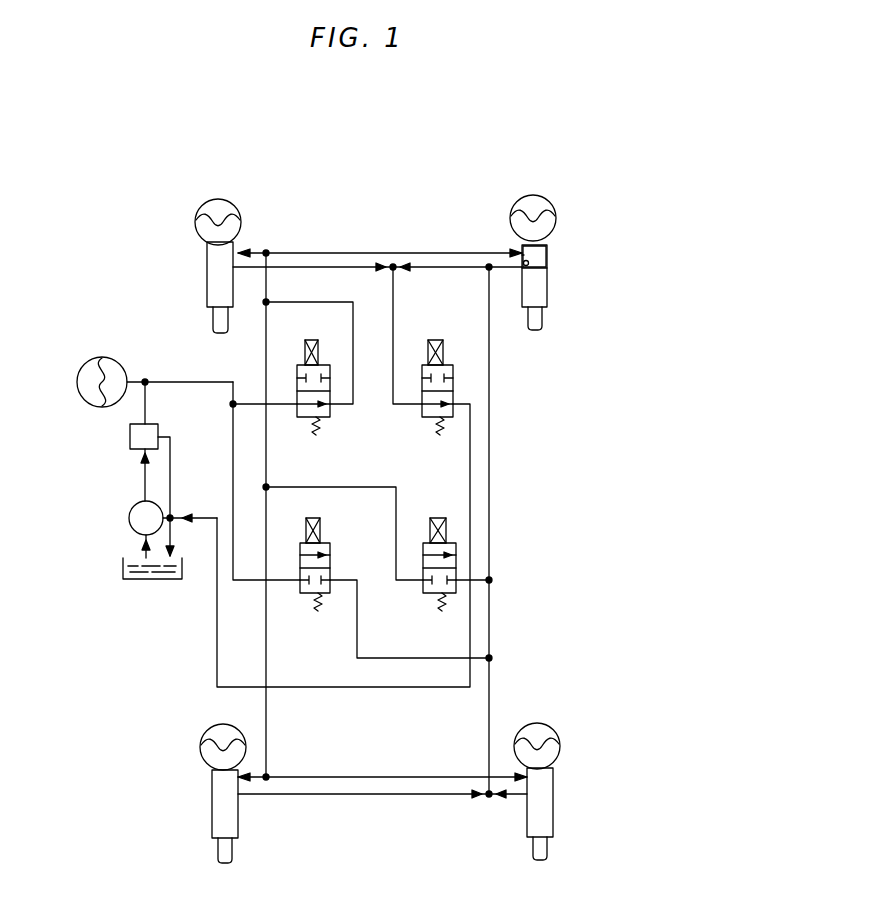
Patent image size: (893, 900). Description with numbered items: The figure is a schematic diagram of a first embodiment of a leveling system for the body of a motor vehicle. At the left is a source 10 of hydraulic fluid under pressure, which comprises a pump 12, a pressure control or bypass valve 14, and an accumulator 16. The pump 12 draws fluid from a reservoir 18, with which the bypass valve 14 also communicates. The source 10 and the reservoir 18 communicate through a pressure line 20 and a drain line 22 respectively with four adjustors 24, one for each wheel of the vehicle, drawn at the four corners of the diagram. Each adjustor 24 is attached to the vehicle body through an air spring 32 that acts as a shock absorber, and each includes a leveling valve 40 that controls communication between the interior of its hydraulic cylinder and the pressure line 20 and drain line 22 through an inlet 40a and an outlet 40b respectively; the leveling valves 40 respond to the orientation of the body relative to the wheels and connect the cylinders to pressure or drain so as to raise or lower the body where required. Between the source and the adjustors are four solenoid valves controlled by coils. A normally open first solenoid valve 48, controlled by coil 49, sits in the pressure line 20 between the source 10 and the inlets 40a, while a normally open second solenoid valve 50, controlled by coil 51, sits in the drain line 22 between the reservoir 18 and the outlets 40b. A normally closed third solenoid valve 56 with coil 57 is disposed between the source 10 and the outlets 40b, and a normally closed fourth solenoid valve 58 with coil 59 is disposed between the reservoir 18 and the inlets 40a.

The source of hydraulic fluid under pressure 10 is at (135, 487).
The pump 12 is at (130, 518).
The pressure control or bypass valve 14 is at (130, 440).
The accumulator 16 is at (77, 382).
The reservoir 18 is at (123, 570).
The pressure line 20 is at (333, 253).
The drain line 22 is at (421, 266).
The adjustor 24 is at (200, 262).
The air spring 32 is at (202, 207).
The leveling valve 40 is at (549, 262).
The inlet 40a is at (522, 255).
The outlet 40b is at (522, 268).
The first solenoid valve 48 is at (333, 419).
The coil 49 is at (305, 352).
The second solenoid valve 50 is at (420, 416).
The coil 51 is at (443, 352).
The third solenoid valve 56 is at (305, 595).
The coil 57 is at (322, 530).
The fourth solenoid valve 58 is at (424, 592).
The coil 59 is at (438, 518).